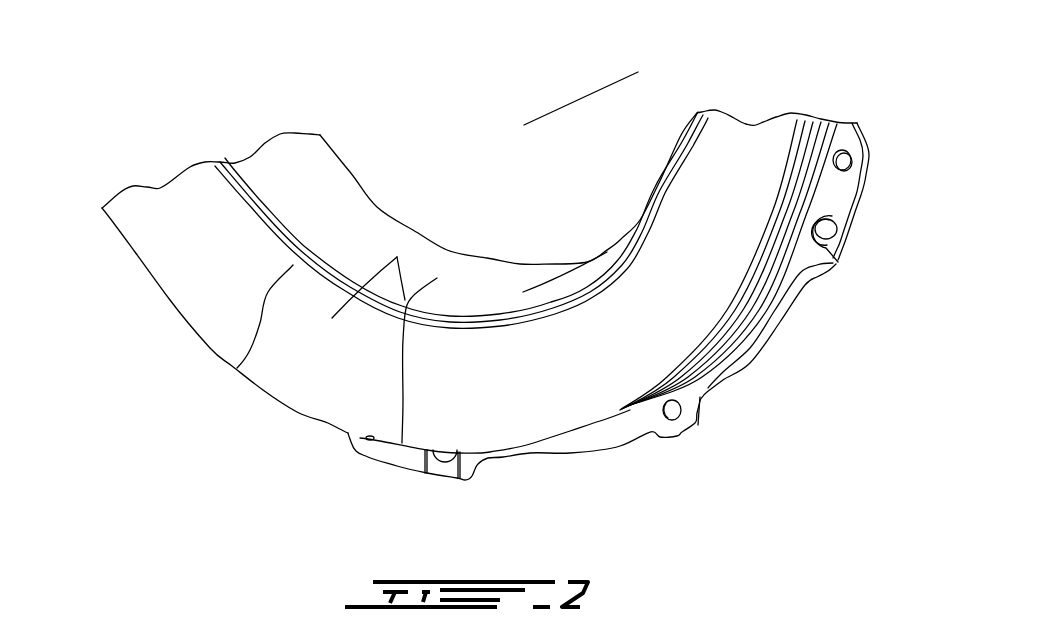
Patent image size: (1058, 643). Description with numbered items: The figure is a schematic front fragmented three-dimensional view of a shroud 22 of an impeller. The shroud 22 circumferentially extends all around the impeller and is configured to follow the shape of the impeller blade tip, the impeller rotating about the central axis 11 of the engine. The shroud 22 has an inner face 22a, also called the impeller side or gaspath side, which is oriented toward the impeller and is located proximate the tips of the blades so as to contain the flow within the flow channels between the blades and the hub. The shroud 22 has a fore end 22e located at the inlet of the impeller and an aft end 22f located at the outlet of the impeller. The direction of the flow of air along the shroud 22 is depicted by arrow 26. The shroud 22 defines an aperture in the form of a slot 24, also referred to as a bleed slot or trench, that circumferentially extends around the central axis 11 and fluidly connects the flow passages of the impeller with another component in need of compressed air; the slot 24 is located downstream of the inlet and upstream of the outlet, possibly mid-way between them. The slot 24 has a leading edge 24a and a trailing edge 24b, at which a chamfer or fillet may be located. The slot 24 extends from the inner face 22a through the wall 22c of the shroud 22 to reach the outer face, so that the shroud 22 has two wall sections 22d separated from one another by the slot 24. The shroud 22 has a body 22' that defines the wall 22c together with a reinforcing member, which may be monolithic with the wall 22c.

The central axis 11 is at (579, 100).
The shroud 22 is at (401, 264).
The body 22' is at (783, 201).
The inner face 22a is at (330, 210).
The wall 22c is at (703, 282).
The wall sections 22d is at (503, 287).
The fore end 22e is at (415, 228).
The aft end 22f is at (112, 233).
The slot 24 is at (230, 219).
The leading edge 24a is at (437, 278).
The trailing edge 24b is at (237, 368).
The arrow 26 is at (332, 318).